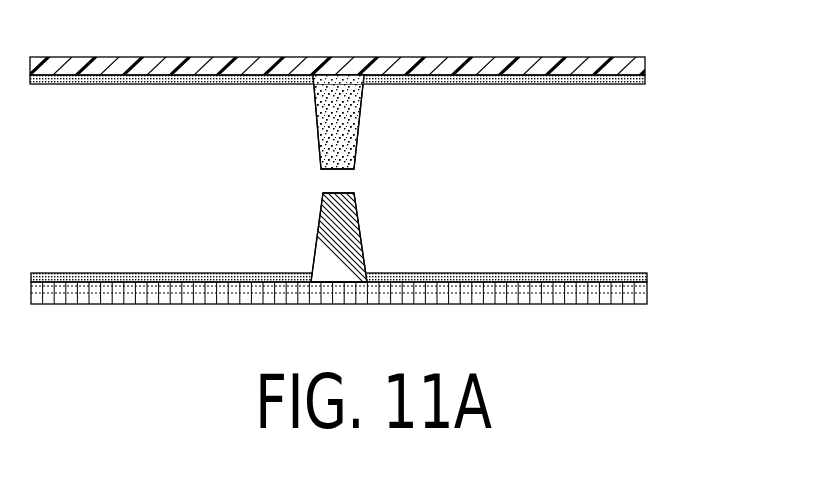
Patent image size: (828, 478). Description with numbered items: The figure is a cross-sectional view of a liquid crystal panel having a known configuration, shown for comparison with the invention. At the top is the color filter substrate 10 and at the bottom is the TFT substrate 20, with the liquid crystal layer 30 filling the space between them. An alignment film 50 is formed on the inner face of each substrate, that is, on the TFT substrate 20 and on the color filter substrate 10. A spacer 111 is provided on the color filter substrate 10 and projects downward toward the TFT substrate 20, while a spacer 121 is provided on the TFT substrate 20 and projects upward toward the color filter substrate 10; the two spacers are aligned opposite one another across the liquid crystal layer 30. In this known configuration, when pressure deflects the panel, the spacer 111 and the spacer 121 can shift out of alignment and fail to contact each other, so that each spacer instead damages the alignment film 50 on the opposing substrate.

The color filter substrate 10 is at (647, 67).
The TFT substrate 20 is at (649, 289).
The liquid crystal layer 30 is at (617, 183).
The alignment film 50 is at (647, 81).
The spacer 111 is at (318, 125).
The spacer 121 is at (346, 235).